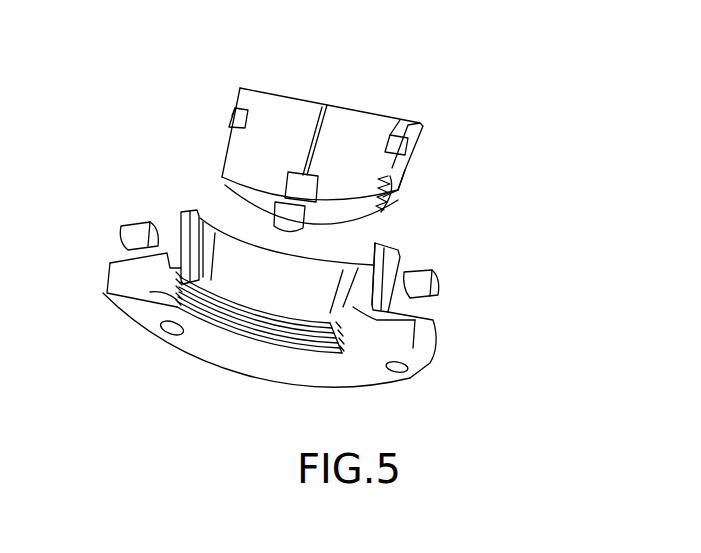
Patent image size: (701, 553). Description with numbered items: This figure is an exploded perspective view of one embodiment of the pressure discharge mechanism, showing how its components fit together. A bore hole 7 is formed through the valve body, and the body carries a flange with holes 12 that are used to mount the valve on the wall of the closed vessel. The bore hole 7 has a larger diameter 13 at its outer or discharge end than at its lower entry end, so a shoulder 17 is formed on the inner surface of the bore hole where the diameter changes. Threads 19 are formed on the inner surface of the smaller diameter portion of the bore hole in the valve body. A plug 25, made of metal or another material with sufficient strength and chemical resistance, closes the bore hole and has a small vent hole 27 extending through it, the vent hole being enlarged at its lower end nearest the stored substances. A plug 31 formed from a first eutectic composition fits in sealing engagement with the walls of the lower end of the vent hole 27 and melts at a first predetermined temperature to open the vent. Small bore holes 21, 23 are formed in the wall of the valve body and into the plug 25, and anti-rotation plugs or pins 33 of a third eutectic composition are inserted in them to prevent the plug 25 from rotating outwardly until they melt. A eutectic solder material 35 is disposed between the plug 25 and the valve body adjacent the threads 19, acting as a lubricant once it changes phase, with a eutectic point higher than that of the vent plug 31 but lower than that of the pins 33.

The bore hole 7 is at (310, 246).
The holes 12 is at (412, 376).
The larger diameter 13 is at (170, 255).
The shoulder 17 is at (353, 333).
The threads 19 is at (230, 337).
The small bore hole 21 is at (233, 107).
The small bore hole 23 is at (393, 144).
The plug 25 is at (357, 145).
The small vent hole 27 is at (315, 135).
The plug 31 is at (287, 207).
The anti-rotation plugs or pins 33 is at (440, 283).
The solder material 35 is at (153, 297).